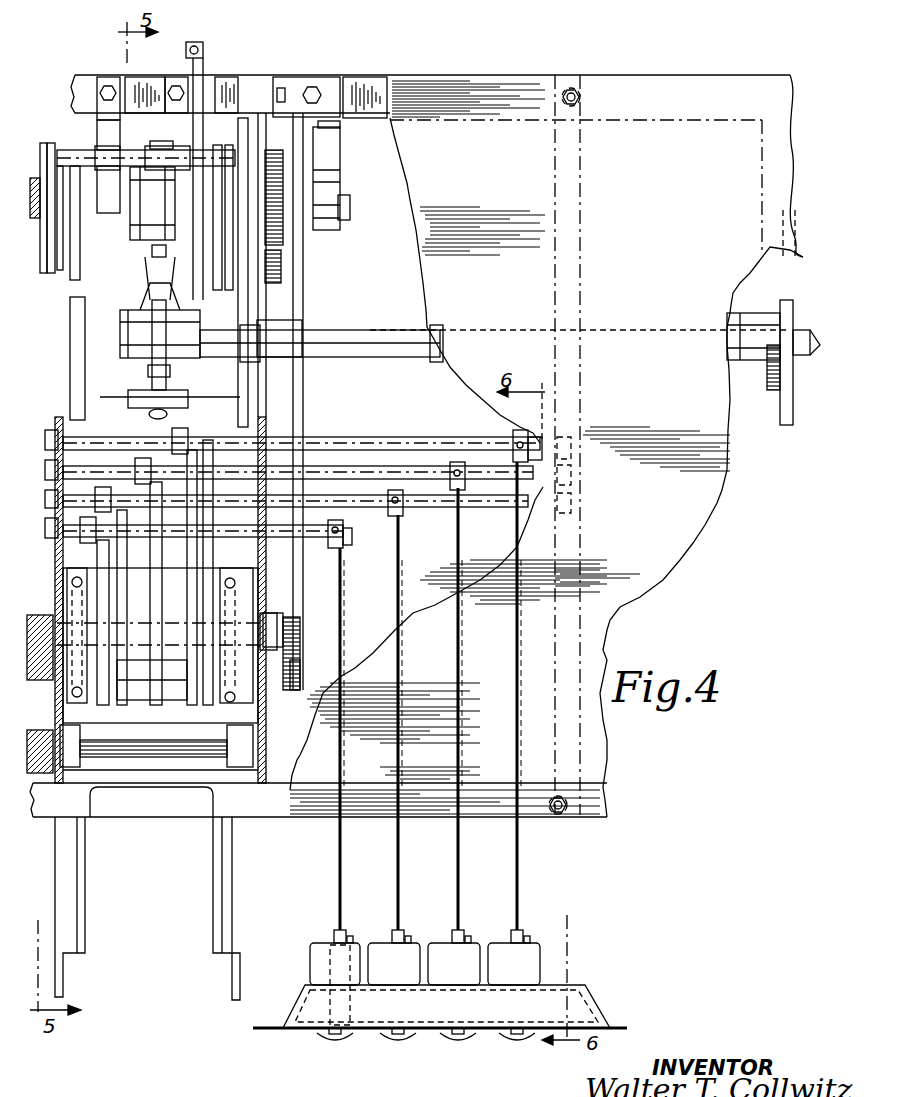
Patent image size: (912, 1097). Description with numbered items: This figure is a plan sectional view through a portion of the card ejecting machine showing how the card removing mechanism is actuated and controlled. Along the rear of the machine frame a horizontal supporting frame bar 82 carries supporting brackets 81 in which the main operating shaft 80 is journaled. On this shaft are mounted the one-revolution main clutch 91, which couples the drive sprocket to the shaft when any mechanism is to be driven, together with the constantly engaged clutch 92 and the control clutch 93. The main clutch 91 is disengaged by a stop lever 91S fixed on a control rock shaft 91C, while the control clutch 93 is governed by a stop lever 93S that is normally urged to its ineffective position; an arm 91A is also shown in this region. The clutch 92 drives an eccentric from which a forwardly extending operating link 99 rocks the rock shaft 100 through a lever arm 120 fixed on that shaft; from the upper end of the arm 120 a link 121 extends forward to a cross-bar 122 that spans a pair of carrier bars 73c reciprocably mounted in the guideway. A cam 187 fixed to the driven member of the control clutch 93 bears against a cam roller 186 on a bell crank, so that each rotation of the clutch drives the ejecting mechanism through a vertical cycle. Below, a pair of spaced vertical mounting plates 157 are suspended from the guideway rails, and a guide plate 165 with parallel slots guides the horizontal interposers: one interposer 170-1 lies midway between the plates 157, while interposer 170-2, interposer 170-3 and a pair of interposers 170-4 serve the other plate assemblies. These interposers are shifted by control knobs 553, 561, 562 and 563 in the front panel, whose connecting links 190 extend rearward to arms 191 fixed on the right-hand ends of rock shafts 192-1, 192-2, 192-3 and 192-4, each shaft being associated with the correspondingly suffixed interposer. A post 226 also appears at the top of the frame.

The post 226 is at (213, 113).
The horizontal supporting frame bar 82 is at (365, 88).
The main clutch 91 is at (47, 143).
The control rock shaft 91C is at (120, 152).
The supporting brackets 81 is at (323, 167).
The main operating shaft 80 is at (340, 194).
The clutch 92 is at (132, 235).
The cam roller 186 is at (283, 245).
The operating link 99 is at (155, 258).
The control clutch 93 is at (230, 247).
The cam 187 is at (280, 270).
The stop lever 91S is at (60, 268).
The stop lever 93S is at (231, 270).
The lever arm 120 is at (143, 298).
The arm 91A is at (70, 316).
The link 121 is at (152, 366).
The rock shaft 100 is at (350, 347).
The carrier bars 73c is at (248, 390).
The cross-bar 122 is at (100, 402).
The rock shaft 192-3 is at (375, 443).
The arms 191 is at (513, 433).
The rock shaft 192-1 is at (360, 474).
The rock shaft 192-2 is at (326, 500).
The rock shaft 192-4 is at (313, 533).
The interposers 170-4 is at (219, 559).
The vertical mounting plates 157 is at (60, 562).
The guide plate 165 is at (131, 690).
The interposer 170-2 is at (110, 718).
The interposer 170-3 is at (200, 718).
The interposer 170-1 is at (137, 787).
The connecting links 190 is at (398, 877).
The control knob 553 is at (335, 1040).
The control knob 561 is at (398, 1040).
The control knob 562 is at (458, 1040).
The control knob 563 is at (517, 1040).